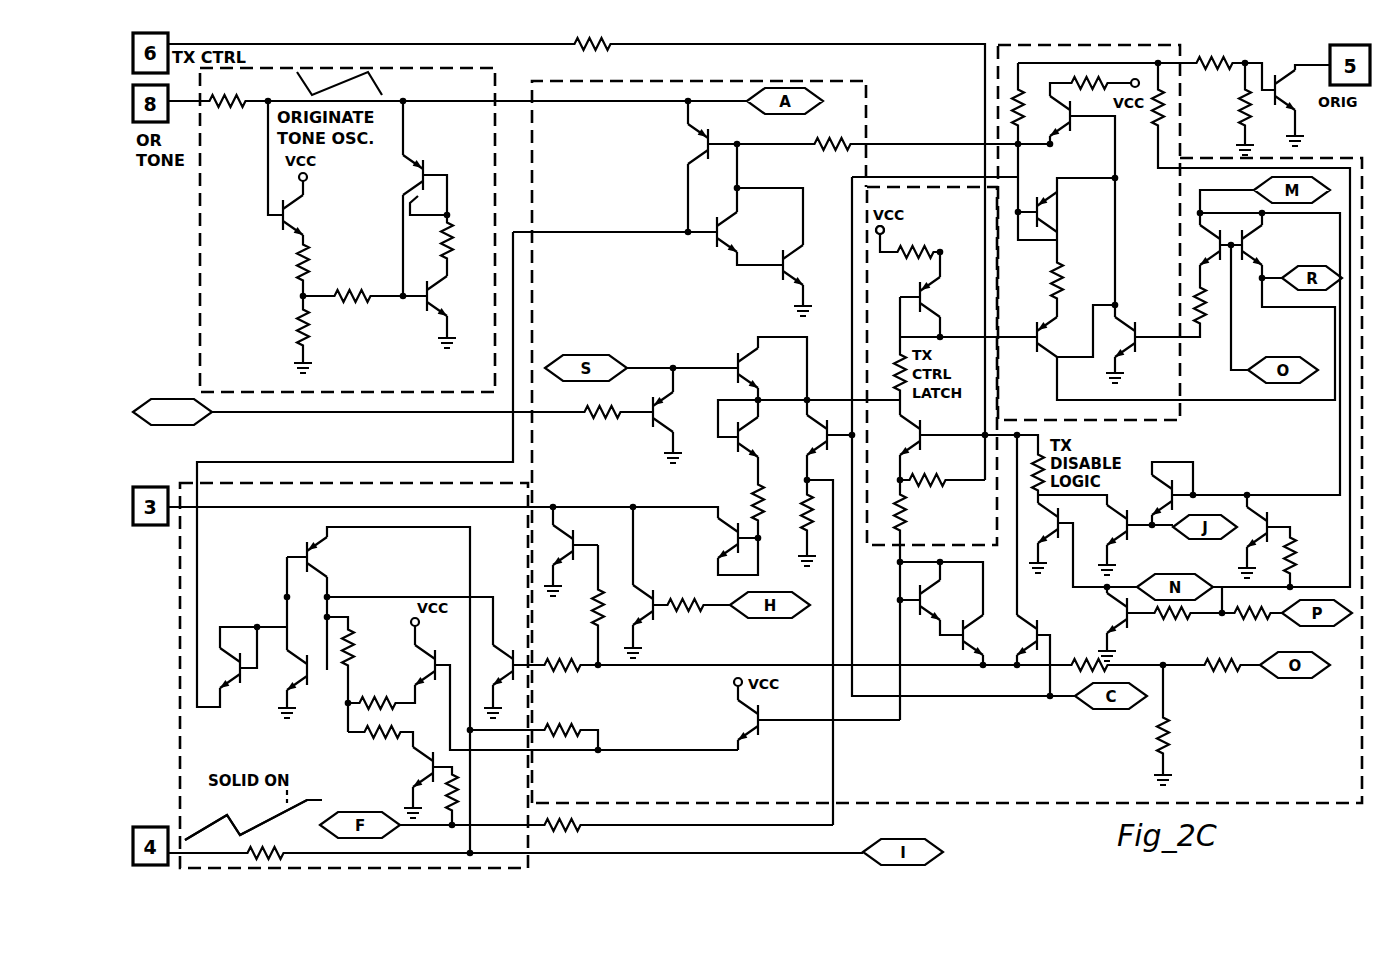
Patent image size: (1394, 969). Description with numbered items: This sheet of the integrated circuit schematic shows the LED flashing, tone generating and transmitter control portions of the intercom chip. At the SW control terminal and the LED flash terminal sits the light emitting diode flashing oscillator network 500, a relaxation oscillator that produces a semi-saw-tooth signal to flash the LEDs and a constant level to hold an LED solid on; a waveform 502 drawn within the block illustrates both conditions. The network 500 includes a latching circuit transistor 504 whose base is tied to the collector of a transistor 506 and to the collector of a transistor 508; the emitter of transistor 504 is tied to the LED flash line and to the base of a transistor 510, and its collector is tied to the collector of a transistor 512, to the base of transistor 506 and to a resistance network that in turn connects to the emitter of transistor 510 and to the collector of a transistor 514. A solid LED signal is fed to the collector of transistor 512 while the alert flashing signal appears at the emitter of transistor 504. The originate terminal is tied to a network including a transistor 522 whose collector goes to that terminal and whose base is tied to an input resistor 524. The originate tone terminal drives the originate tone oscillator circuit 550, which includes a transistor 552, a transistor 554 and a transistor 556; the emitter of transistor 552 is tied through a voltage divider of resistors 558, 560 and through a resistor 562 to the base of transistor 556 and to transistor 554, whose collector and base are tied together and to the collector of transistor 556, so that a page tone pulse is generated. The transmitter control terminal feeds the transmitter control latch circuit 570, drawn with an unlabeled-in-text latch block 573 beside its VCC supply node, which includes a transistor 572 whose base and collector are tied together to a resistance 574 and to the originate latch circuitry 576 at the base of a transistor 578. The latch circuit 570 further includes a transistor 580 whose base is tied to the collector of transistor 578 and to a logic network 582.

The light emitting diode flashing oscillator network 500 is at (180, 714).
The waveform 502 is at (293, 814).
The latching circuit transistor 504 is at (321, 560).
The transistor 506 is at (308, 692).
The transistor 508 is at (238, 692).
The transistor 510 is at (422, 667).
The transistor 512 is at (514, 653).
The transistor 514 is at (421, 762).
The transistor 522 is at (1291, 74).
The input resistor 524 is at (1223, 70).
The originate tone oscillator circuit 550 is at (200, 306).
The transistor 552 is at (304, 213).
The transistor 554 is at (425, 175).
The transistor 556 is at (440, 301).
The resistor 558 is at (305, 261).
The resistor 560 is at (299, 332).
The resistor 562 is at (383, 78).
The transmitter control latch circuit 570 is at (975, 535).
The transistor 572 is at (916, 289).
The latch supply node 573 is at (964, 222).
The resistance 574 is at (907, 401).
The originate latch circuitry 576 is at (998, 75).
The transistor 578 is at (1034, 352).
The transistor 580 is at (916, 436).
The logic network 582 is at (1045, 803).